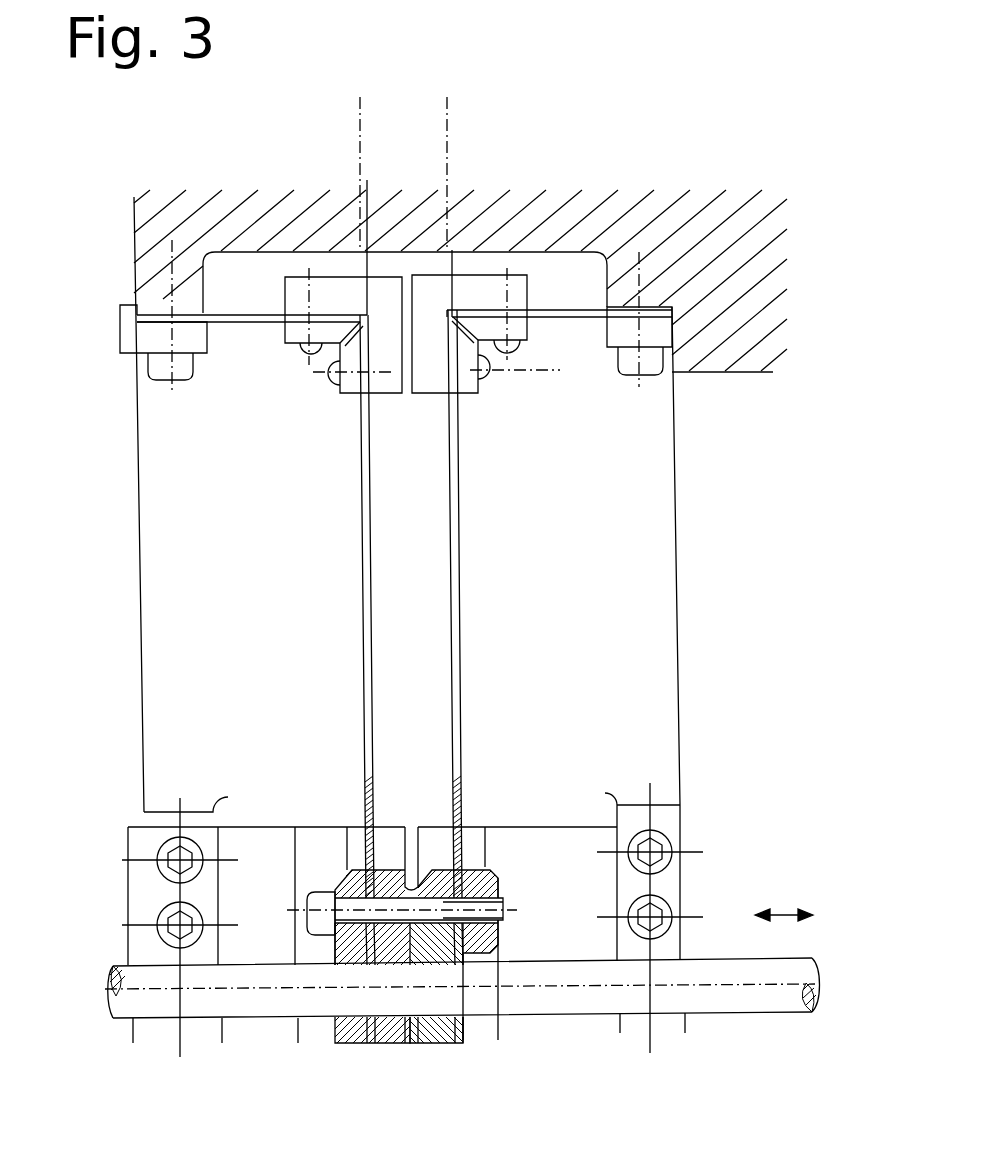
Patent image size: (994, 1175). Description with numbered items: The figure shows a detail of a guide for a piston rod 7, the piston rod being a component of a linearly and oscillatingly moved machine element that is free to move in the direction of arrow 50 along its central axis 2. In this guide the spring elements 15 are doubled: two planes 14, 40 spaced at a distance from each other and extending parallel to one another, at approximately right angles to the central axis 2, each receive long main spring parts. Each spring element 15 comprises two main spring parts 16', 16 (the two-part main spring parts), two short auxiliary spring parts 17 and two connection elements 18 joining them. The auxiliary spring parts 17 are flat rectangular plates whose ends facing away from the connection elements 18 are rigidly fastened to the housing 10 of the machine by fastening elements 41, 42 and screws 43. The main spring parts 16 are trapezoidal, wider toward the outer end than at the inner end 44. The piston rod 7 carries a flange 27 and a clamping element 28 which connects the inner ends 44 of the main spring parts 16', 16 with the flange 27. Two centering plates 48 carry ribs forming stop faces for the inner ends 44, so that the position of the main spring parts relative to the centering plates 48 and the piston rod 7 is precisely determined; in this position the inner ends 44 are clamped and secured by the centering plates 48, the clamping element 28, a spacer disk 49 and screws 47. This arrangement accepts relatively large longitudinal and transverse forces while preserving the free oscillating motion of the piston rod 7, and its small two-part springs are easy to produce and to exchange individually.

The central axis 2 is at (820, 988).
The piston rod 7 is at (743, 993).
The housing 10 is at (688, 217).
The plane 14 is at (360, 170).
The spring element 15 is at (385, 582).
The main spring part 16 is at (200, 796).
The main spring part 16' is at (668, 797).
The auxiliary spring part 17 is at (557, 308).
The connection element 18 is at (470, 292).
The flange 27 is at (485, 1020).
The clamping element 28 is at (337, 1037).
The plane 40 is at (448, 170).
The fastening element 41 is at (130, 343).
The fastening element 42 is at (660, 335).
The screw 43 is at (642, 358).
The inner end 44 is at (367, 940).
The screw 47 is at (313, 910).
The centering plate 48 is at (443, 1043).
The spacer disk 49 is at (409, 1037).
The arrow 50 is at (785, 912).